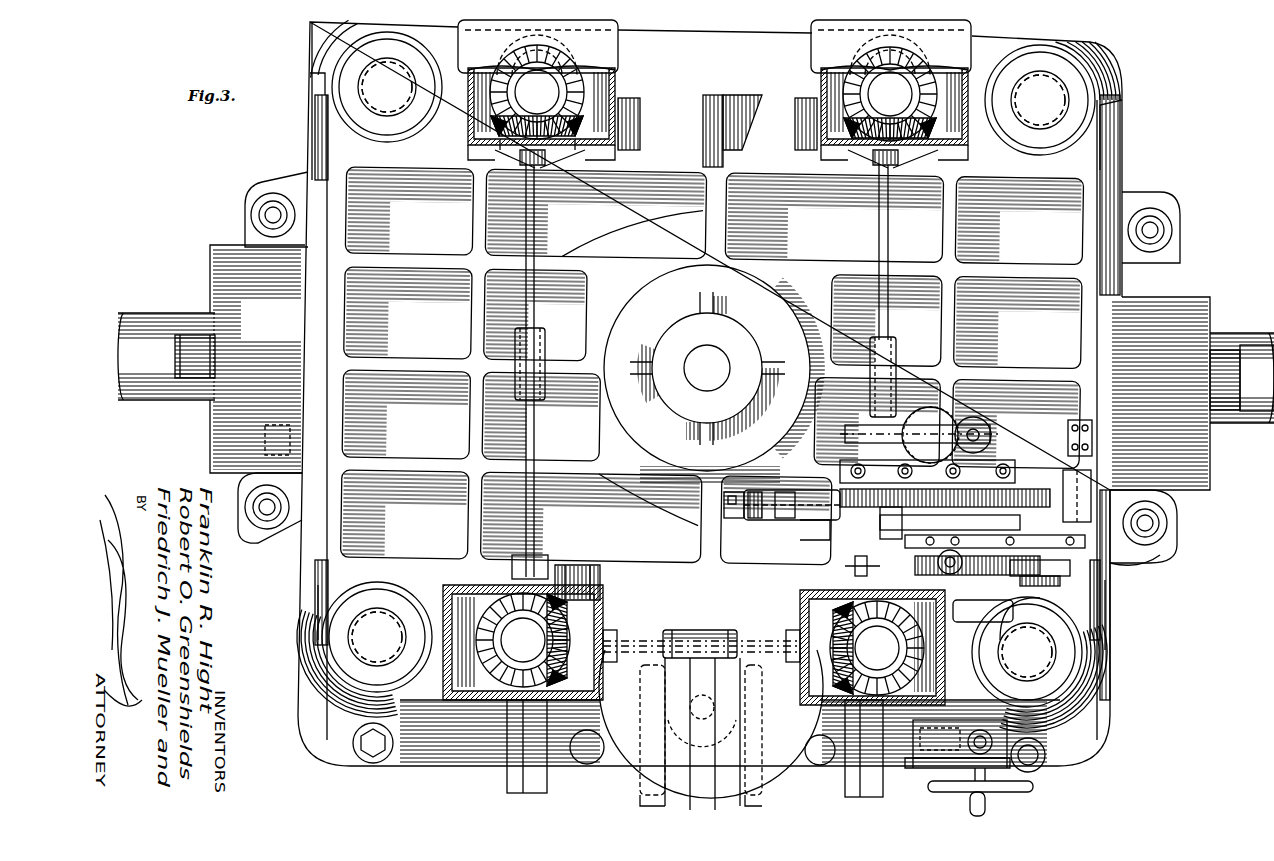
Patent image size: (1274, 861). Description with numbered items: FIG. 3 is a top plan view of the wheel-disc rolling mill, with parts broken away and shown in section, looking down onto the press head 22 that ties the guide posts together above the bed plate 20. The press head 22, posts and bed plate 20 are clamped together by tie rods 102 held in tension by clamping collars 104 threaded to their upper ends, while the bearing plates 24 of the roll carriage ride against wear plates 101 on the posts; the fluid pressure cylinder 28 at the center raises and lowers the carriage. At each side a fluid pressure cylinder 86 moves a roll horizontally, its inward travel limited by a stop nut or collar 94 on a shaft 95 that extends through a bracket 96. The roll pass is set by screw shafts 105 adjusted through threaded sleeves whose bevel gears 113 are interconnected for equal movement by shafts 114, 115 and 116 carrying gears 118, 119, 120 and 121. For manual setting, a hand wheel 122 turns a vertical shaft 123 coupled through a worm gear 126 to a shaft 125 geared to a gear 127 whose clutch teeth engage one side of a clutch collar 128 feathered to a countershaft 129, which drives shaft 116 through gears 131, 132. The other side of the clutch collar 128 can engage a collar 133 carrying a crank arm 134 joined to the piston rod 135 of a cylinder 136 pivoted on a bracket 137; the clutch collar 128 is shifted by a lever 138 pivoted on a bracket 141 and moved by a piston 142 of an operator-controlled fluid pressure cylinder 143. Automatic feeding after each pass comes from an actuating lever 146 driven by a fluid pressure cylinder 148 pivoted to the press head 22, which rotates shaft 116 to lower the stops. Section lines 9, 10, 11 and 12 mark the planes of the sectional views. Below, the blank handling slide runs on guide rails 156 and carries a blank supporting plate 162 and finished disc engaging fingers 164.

The section line 9 is at (722, 548).
The section line 10 is at (1000, 437).
The section line 11 is at (1108, 558).
The section line 12 is at (972, 614).
The bed plate 20 is at (312, 609).
The press head 22 is at (335, 172).
The bearing plates 24 is at (322, 136).
The fluid pressure cylinder 28 is at (745, 295).
The fluid pressure cylinder 86 is at (168, 308).
The stop nut or collar 94 is at (190, 380).
The shaft 95 is at (1244, 413).
The bracket 96 is at (210, 268).
The wear plates 101 is at (312, 100).
The tie rods 102 is at (382, 75).
The clamping collars 104 is at (368, 120).
The screw shafts 105 is at (548, 80).
The bevel gear 113 is at (578, 82).
The shaft 114 is at (540, 232).
The shaft 115 is at (642, 640).
The shaft 116 is at (879, 240).
The gear 118 is at (565, 145).
The gear 119 is at (576, 590).
The gear 120 is at (800, 642).
The gear 121 is at (828, 128).
The hand wheel 122 is at (996, 793).
The vertical shaft 123 is at (985, 724).
The shaft 125 is at (952, 648).
The worm gear 126 is at (928, 772).
The gear 127 is at (1020, 598).
The clutch collar 128 is at (1032, 578).
The countershaft 129 is at (1070, 446).
The gear 131 is at (1070, 492).
The gear 132 is at (845, 502).
The collar 133 is at (945, 483).
The crank arm 134 is at (1022, 522).
The piston rod 135 is at (937, 570).
The cylinder 136 is at (805, 522).
The bracket 137 is at (735, 492).
The lever 138 is at (1040, 549).
The bracket 141 is at (860, 568).
The piston 142 is at (1156, 551).
The fluid pressure cylinder 143 is at (1168, 525).
The actuating lever 146 is at (933, 412).
The fluid pressure cylinder 148 is at (975, 417).
The guide rails 156 is at (547, 790).
The blank supporting plate 162 is at (765, 793).
The finished disc engaging fingers 164 is at (705, 768).